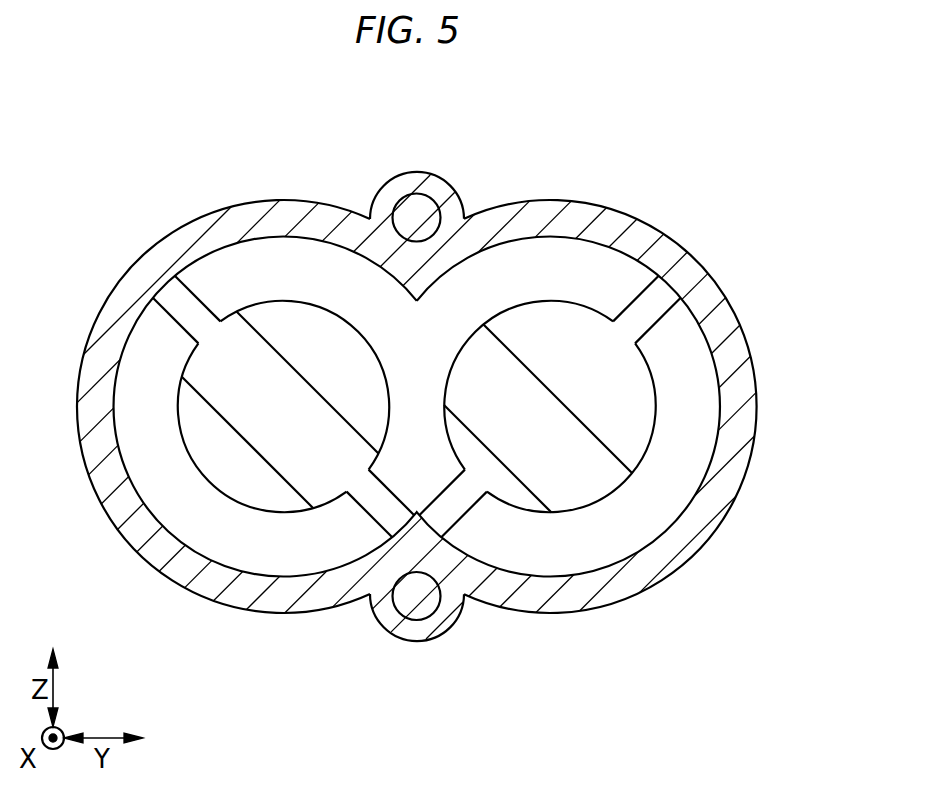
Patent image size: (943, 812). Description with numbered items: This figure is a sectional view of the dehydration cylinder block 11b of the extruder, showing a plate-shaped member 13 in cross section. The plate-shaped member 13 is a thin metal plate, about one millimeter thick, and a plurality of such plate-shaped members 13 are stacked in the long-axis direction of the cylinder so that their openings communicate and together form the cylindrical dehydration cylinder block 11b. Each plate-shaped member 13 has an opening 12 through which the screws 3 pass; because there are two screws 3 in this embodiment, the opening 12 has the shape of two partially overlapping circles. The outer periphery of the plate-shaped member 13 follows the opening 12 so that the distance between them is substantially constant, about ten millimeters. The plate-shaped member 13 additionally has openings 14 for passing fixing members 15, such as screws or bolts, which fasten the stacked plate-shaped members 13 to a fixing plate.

The screw 3 is at (263, 482).
The dehydration cylinder block 11b is at (700, 133).
The opening 12 is at (557, 257).
The plate-shaped member 13 is at (737, 385).
The opening 14 is at (413, 195).
The fixing member 15 is at (428, 213).